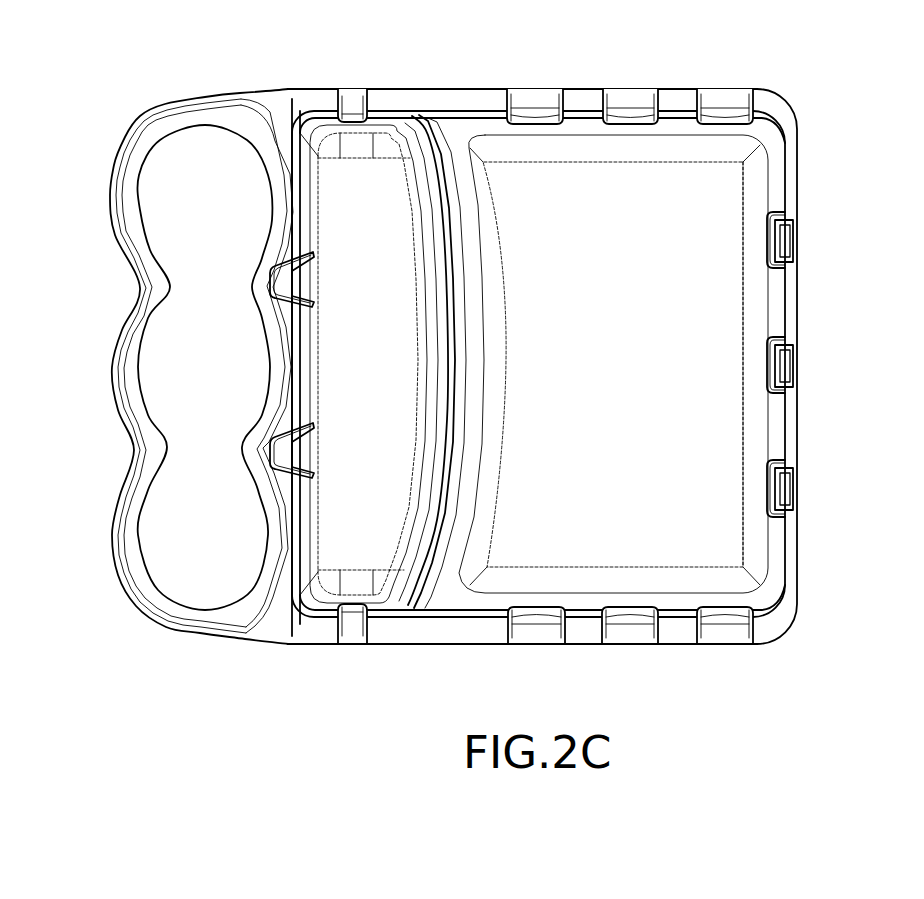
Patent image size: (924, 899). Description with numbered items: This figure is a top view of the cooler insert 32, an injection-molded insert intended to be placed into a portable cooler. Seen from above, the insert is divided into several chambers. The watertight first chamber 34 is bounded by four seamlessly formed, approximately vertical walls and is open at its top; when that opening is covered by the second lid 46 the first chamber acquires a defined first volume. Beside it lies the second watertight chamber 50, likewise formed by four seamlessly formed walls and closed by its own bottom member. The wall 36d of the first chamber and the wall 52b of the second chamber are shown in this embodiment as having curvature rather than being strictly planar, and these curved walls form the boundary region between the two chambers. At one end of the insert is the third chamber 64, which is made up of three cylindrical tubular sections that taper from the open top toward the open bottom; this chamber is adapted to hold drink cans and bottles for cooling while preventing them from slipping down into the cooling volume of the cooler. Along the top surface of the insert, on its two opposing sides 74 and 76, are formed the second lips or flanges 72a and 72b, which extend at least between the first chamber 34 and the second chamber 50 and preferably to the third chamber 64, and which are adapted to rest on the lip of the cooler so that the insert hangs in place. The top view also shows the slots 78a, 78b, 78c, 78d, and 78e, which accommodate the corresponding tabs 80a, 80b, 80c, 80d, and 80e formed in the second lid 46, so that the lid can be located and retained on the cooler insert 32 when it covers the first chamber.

The cooler insert 32 is at (800, 310).
The watertight first chamber 34 is at (645, 498).
The wall 36d is at (462, 225).
The second lid 46 is at (554, 308).
The second watertight chamber 50 is at (378, 376).
The wall 52b is at (404, 286).
The third chamber 64 is at (212, 376).
The second lip or flange 72a is at (307, 634).
The second lip or flange 72b is at (447, 88).
The side of cooler insert 74 is at (580, 644).
The side of cooler insert 76 is at (585, 88).
The slot 78a is at (797, 238).
The slot 78b is at (797, 363).
The slot 78c is at (797, 487).
The slot 78d is at (308, 480).
The slot 78e is at (313, 260).
The tab 80a is at (780, 240).
The tab 80b is at (780, 365).
The tab 80c is at (780, 488).
The tab 80d is at (308, 448).
The tab 80e is at (313, 280).